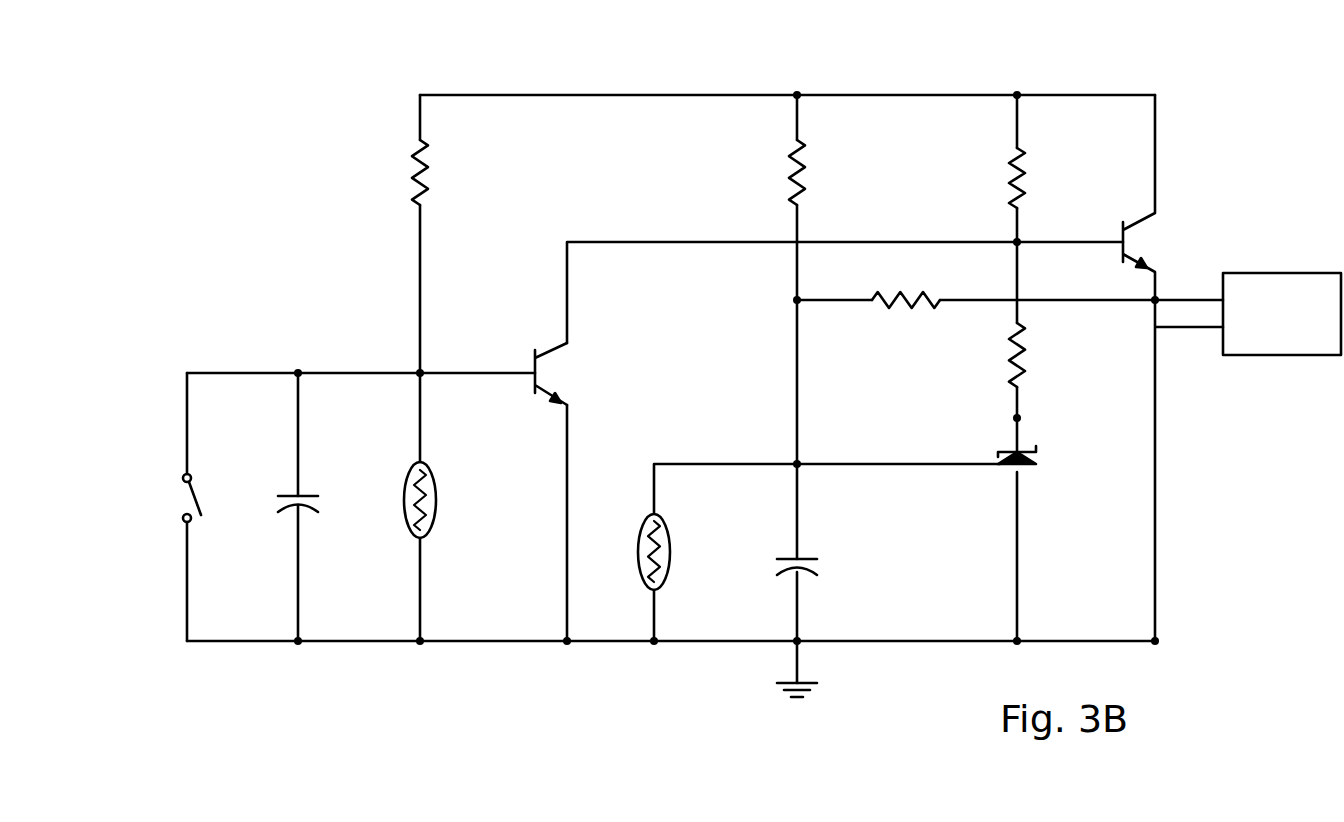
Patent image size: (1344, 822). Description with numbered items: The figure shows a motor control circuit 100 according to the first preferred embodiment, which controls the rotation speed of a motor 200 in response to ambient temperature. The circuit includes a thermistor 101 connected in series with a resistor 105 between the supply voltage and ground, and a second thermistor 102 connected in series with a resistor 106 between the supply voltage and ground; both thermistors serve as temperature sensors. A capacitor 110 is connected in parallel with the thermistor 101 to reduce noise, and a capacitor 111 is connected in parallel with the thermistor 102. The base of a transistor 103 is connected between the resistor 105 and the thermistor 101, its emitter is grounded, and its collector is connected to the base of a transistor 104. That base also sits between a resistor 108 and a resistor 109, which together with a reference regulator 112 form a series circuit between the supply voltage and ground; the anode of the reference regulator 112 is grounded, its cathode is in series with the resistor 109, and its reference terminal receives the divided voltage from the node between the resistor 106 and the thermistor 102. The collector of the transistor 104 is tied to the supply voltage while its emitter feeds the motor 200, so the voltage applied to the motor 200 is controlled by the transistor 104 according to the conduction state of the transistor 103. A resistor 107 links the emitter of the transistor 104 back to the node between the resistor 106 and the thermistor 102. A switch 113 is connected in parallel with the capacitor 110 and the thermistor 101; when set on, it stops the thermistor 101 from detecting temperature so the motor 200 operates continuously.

The motor control circuit 100 is at (1258, 66).
The thermistor TR1 101 is at (436, 478).
The thermistor TR2 102 is at (668, 572).
The transistor SW1 103 is at (560, 347).
The transistor SW2 104 is at (1136, 220).
The resistor R1 105 is at (408, 180).
The resistor R2 106 is at (800, 145).
The resistor R3 107 is at (900, 308).
The resistor R4 108 is at (1015, 148).
The resistor R5 109 is at (1025, 345).
The capacitor C1 110 is at (306, 508).
The capacitor C2 111 is at (808, 558).
The reference regulator VR 112 is at (1025, 475).
The switch SW3 113 is at (180, 502).
The motor 200 is at (1270, 356).